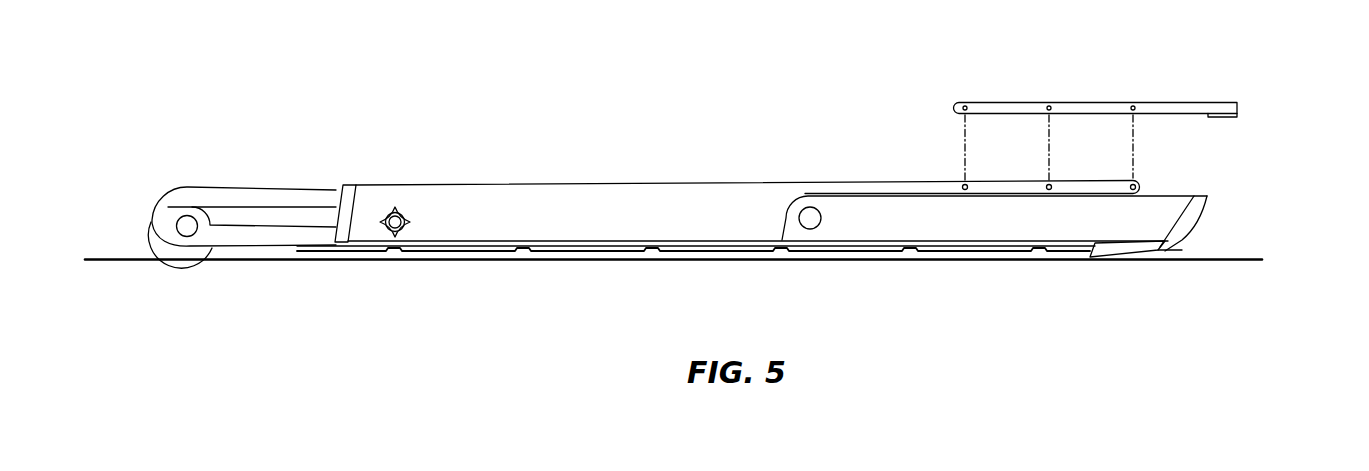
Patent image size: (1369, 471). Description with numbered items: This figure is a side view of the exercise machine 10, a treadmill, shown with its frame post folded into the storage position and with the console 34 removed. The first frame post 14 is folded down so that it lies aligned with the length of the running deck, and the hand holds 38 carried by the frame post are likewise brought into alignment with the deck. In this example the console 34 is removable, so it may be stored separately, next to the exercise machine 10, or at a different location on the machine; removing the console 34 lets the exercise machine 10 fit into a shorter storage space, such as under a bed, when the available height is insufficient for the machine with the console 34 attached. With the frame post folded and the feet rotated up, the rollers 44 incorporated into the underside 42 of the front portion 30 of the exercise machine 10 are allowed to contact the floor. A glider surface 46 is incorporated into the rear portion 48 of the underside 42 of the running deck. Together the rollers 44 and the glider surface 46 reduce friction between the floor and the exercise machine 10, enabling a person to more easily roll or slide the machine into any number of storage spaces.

The exercise machine 10 is at (398, 96).
The first frame post 14 is at (583, 195).
The front portion 30 is at (146, 213).
The console 34 is at (1100, 103).
The hand holds 38 is at (885, 205).
The underside 42 is at (552, 253).
The rollers 44 is at (155, 242).
The glider surface 46 is at (1130, 257).
The rear portion 48 is at (1276, 222).